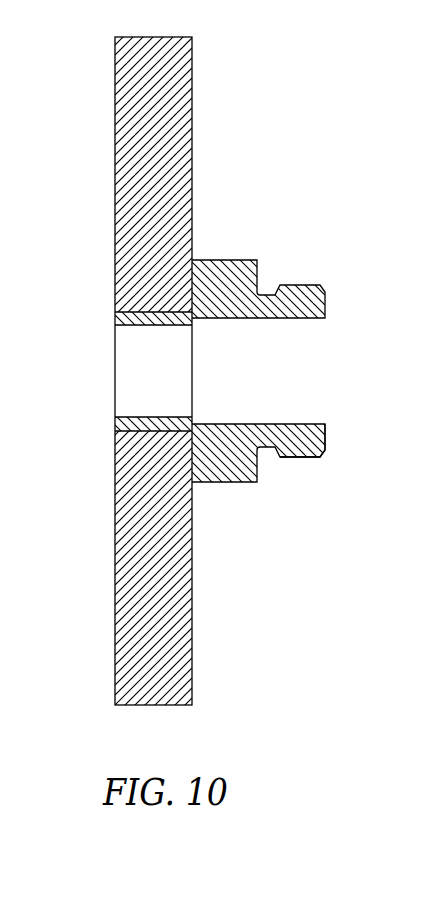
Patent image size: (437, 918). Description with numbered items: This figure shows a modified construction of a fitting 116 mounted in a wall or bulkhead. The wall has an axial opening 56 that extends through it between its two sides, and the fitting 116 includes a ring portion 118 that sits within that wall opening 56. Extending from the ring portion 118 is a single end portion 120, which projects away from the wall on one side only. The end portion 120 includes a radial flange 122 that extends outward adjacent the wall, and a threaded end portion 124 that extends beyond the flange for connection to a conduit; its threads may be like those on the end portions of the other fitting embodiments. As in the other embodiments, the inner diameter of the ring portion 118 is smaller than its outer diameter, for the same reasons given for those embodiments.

The axial opening 56 is at (179, 387).
The fitting 116 is at (259, 345).
The ring portion 118 is at (155, 325).
The end portion 120 is at (258, 275).
The radial flange 122 is at (227, 455).
The threaded end portion 124 is at (297, 457).